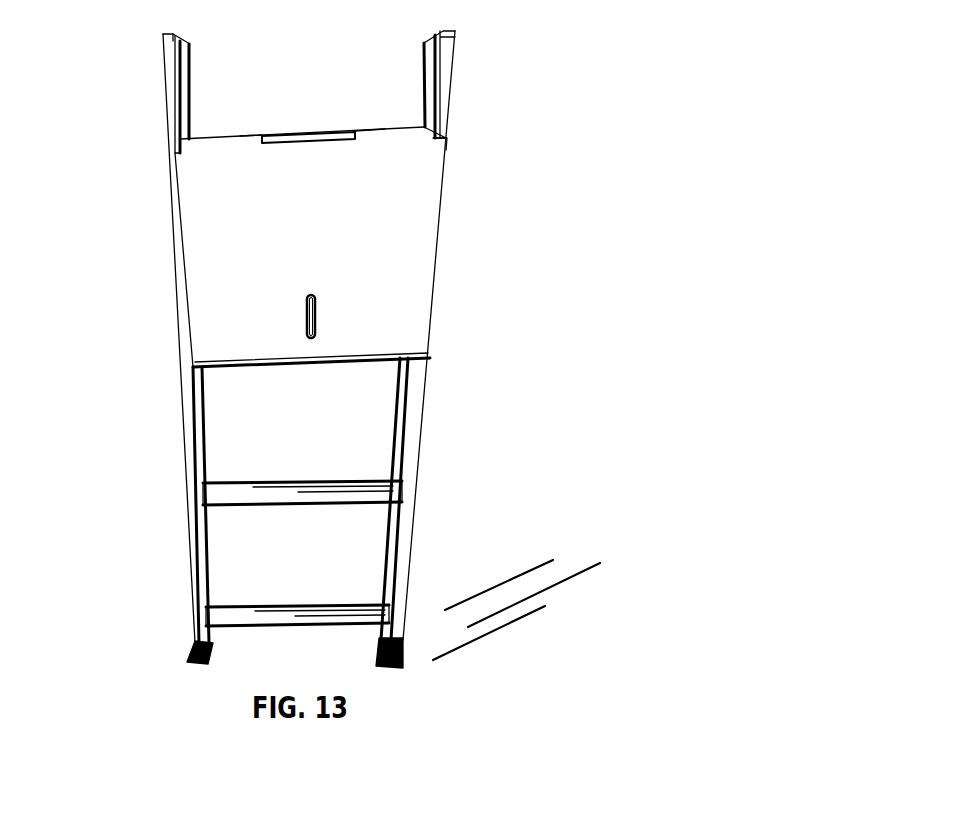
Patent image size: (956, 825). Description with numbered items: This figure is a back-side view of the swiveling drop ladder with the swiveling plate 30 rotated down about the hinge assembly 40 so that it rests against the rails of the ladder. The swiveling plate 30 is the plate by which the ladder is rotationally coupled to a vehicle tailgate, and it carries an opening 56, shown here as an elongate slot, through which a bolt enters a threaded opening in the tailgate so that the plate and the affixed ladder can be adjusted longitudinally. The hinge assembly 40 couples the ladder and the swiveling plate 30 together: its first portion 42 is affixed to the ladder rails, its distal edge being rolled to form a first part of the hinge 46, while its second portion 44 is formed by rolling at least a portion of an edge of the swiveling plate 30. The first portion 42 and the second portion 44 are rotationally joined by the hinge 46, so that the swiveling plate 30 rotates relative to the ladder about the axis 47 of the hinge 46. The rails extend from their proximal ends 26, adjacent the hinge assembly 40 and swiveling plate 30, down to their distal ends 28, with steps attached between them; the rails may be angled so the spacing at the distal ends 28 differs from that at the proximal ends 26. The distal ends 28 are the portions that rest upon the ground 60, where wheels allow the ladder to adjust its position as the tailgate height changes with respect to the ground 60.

The proximal ends 26 is at (468, 52).
The distal ends 28 is at (415, 600).
The swiveling plate 30 is at (398, 250).
The hinge assembly 40 is at (580, 125).
The first portion 42 is at (300, 146).
The second portion 44 is at (375, 133).
The hinge 46 is at (465, 135).
The axis 47 is at (168, 140).
The opening 56 is at (315, 325).
The ground 60 is at (622, 619).